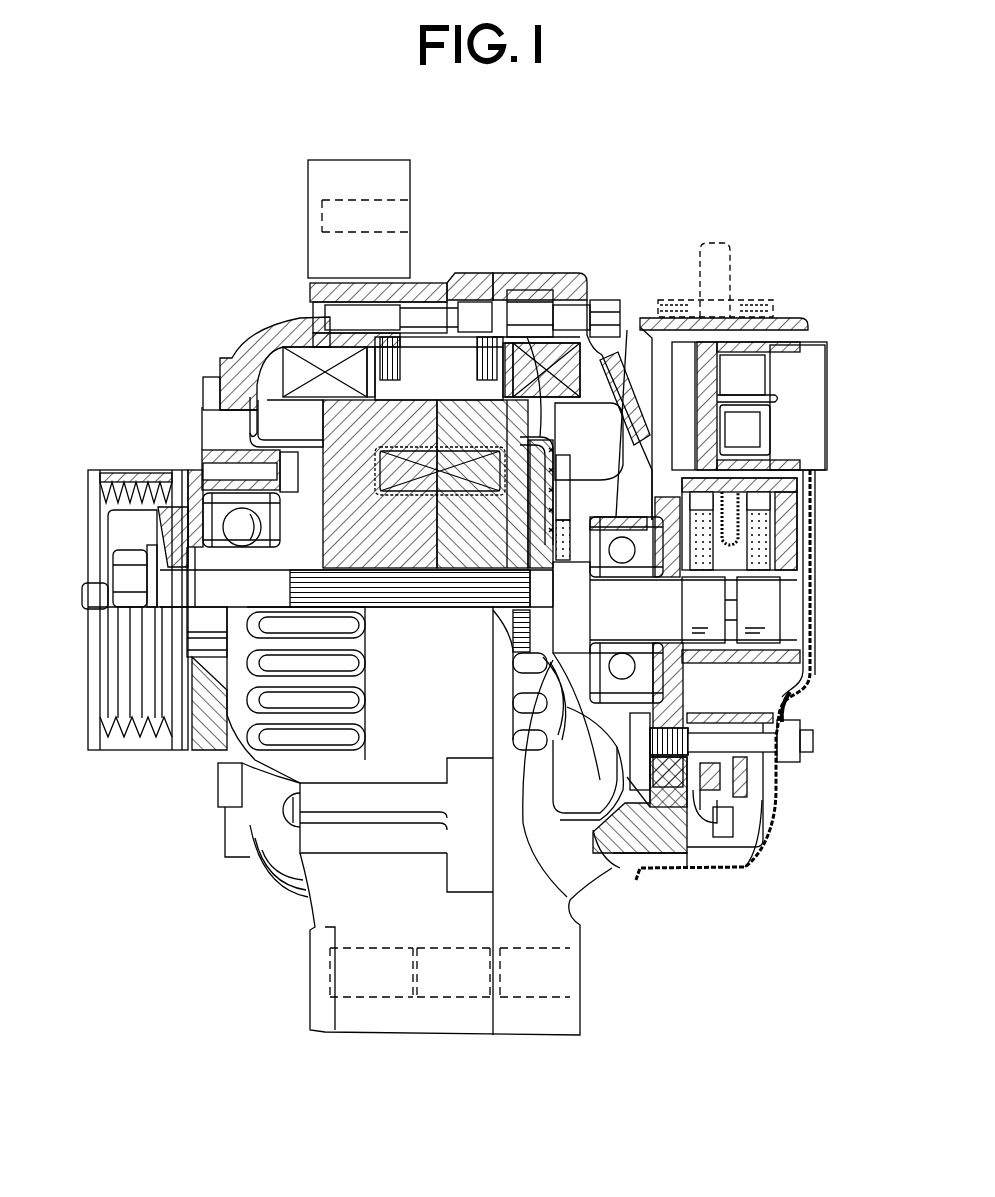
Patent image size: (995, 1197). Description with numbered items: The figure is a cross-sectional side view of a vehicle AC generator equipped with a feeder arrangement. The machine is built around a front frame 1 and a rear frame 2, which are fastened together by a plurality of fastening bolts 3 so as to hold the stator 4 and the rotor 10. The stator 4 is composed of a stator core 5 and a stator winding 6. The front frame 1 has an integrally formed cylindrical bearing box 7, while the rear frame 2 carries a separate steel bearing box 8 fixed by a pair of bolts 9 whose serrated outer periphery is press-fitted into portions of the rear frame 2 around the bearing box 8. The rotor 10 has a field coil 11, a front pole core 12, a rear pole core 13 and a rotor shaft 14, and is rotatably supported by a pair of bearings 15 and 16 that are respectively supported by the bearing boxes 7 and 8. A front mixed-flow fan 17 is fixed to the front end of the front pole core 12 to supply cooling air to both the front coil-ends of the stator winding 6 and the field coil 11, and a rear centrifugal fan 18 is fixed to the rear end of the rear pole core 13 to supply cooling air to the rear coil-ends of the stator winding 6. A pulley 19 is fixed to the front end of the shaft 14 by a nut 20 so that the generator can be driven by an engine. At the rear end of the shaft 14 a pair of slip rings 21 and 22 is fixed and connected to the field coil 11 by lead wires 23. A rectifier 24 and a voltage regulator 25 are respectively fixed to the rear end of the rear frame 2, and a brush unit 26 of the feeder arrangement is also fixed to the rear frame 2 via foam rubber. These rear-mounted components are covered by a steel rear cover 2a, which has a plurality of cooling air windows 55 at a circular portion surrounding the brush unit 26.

The front frame 1 is at (300, 352).
The rear frame 2 is at (567, 277).
The rear cover 2a is at (750, 860).
The fastening bolts 3 is at (490, 273).
The stator 4 is at (308, 355).
The stator core 5 is at (423, 350).
The stator winding 6 is at (318, 360).
The cylindrical bearing box 7 is at (205, 380).
The steel bearing box 8 is at (648, 510).
The bolts 9 is at (687, 867).
The rotor 10 is at (252, 398).
The field coil 11 is at (447, 440).
The front pole core 12 is at (293, 345).
The rear pole core 13 is at (590, 417).
The rotor shaft 14 is at (143, 473).
The bearing 15 is at (200, 492).
The bearing 16 is at (672, 320).
The front mixed-flow fan 17 is at (222, 430).
The rear centrifugal fan 18 is at (622, 440).
The pulley 19 is at (93, 470).
The nut 20 is at (120, 567).
The slip ring 21 is at (773, 590).
The slip ring 22 is at (713, 630).
The lead wires 23 is at (615, 868).
The rectifier 24 is at (792, 682).
The voltage regulator 25 is at (838, 368).
The brush unit 26 is at (817, 506).
The cooling air windows 55 is at (802, 711).